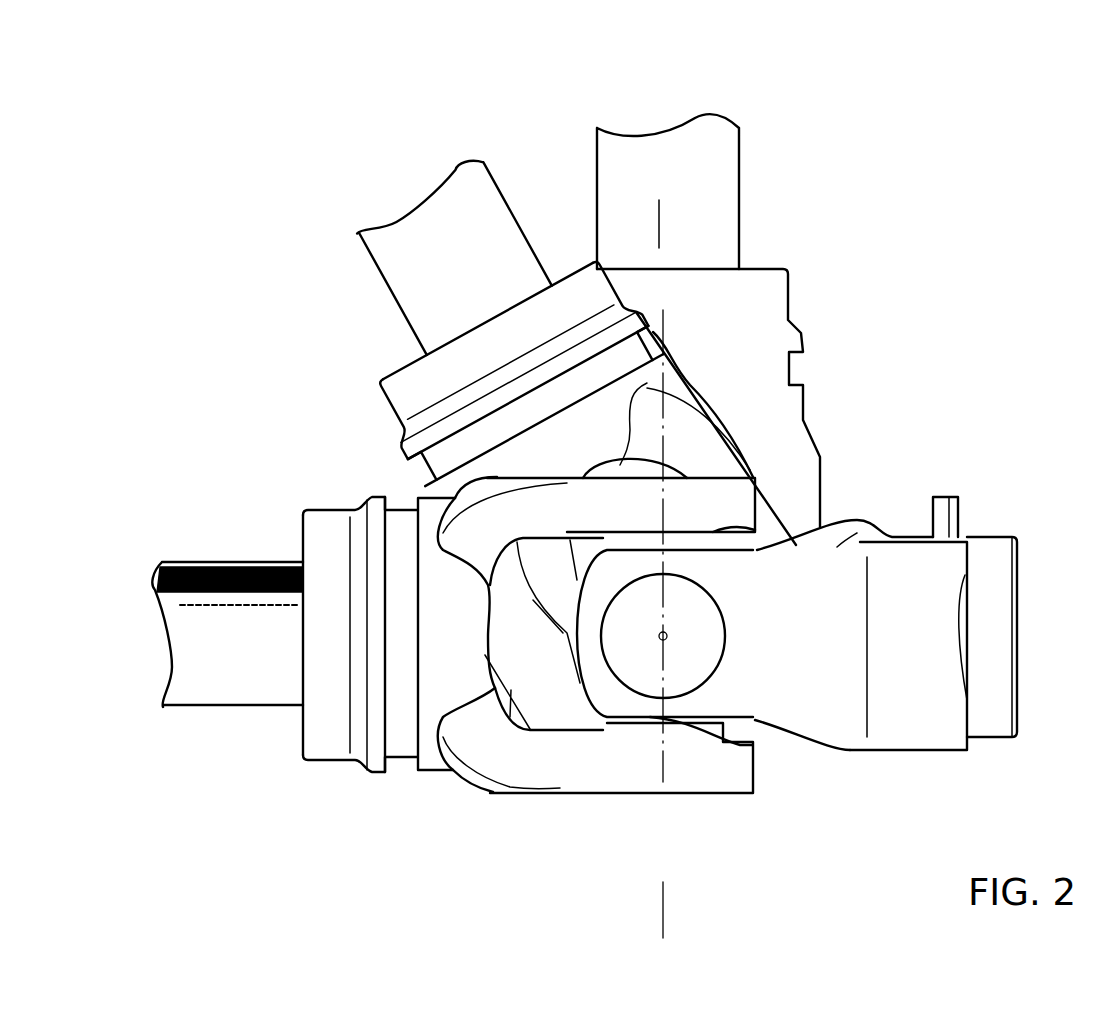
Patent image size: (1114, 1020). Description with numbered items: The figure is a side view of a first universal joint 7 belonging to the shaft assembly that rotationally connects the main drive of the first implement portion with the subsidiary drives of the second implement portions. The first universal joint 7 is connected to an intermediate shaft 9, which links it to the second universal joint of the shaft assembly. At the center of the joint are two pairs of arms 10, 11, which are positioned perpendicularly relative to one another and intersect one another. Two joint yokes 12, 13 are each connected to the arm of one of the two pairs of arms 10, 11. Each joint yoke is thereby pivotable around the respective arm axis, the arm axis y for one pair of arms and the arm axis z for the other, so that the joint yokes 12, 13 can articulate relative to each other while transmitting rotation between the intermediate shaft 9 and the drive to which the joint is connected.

The first universal joint 7 is at (590, 60).
The intermediate shaft 9 is at (218, 682).
The pair of arms 10 is at (663, 785).
The pair of arms 11 is at (713, 730).
The joint yoke 12 is at (830, 673).
The joint yoke 13 is at (482, 750).
The arm axis z is at (655, 641).
The arm axis y is at (663, 915).